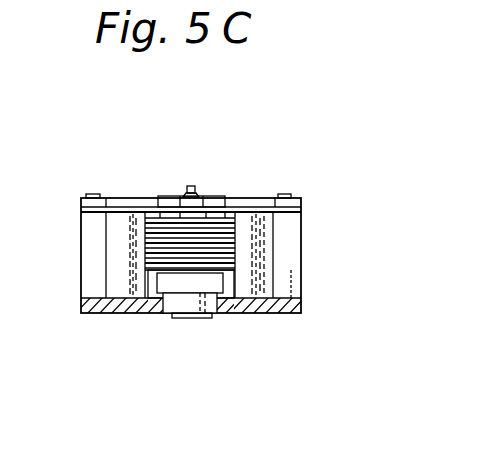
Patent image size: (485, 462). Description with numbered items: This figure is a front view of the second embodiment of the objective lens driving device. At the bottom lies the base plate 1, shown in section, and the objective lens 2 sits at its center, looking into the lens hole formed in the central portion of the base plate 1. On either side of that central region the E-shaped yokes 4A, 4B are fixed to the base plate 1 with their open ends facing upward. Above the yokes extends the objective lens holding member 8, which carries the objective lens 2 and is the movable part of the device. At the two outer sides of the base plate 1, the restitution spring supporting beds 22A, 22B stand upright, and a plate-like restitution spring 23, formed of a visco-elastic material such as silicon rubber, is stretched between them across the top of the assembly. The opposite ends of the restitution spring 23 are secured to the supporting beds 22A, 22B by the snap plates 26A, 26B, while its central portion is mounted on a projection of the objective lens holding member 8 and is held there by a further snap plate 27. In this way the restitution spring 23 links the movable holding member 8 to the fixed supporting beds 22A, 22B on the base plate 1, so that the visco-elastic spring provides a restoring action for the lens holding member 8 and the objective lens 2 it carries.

The base plate 1 is at (290, 312).
The objective lens 2 is at (202, 318).
The E-shaped yoke 4A is at (262, 270).
The E-shaped yoke 4B is at (121, 262).
The objective lens holding member 8 is at (133, 198).
The restitution spring supporting bed 22A is at (285, 230).
The restitution spring supporting bed 22B is at (96, 236).
The restitution spring 23 is at (215, 205).
The snap plate 26A is at (291, 199).
The snap plate 26B is at (86, 194).
The snap plate 27 is at (192, 186).